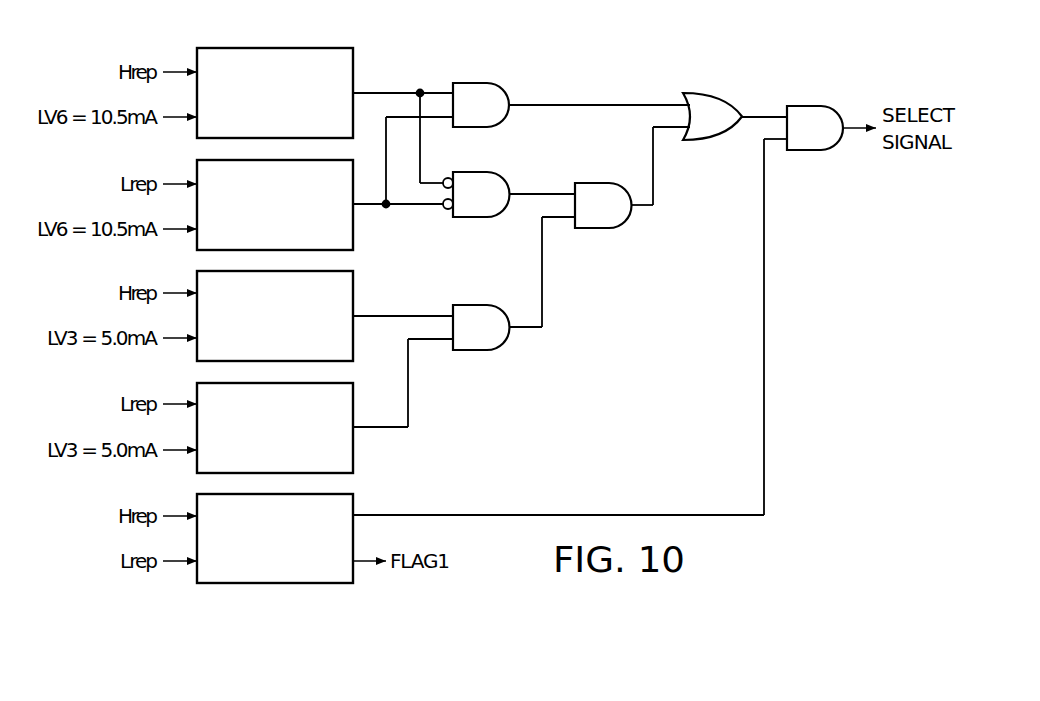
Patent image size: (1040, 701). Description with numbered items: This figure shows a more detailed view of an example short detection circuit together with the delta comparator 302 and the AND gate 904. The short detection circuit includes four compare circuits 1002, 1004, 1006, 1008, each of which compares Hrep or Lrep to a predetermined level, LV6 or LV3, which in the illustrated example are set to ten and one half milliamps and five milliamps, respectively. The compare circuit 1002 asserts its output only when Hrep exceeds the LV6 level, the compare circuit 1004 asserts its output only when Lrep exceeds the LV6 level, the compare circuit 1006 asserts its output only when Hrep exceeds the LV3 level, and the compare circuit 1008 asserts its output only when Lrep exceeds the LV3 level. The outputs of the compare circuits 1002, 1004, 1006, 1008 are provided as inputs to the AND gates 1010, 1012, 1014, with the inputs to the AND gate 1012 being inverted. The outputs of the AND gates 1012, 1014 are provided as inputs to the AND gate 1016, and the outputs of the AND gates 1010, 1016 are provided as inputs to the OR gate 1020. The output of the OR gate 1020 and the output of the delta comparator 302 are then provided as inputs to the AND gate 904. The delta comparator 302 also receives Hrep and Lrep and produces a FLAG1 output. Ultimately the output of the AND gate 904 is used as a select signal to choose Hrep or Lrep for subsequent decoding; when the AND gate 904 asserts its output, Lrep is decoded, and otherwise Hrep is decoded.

The compare circuit 1002 is at (353, 76).
The compare circuit 1004 is at (353, 222).
The compare circuit 1006 is at (353, 299).
The compare circuit 1008 is at (353, 444).
The AND gate 1010 is at (487, 83).
The AND gate 1012 is at (487, 217).
The AND gate 1014 is at (487, 350).
The AND gate 1016 is at (603, 228).
The OR gate 1020 is at (717, 93).
The AND gate 904 is at (815, 106).
The delta comparator 302 is at (275, 583).